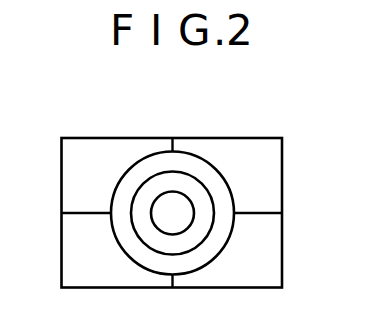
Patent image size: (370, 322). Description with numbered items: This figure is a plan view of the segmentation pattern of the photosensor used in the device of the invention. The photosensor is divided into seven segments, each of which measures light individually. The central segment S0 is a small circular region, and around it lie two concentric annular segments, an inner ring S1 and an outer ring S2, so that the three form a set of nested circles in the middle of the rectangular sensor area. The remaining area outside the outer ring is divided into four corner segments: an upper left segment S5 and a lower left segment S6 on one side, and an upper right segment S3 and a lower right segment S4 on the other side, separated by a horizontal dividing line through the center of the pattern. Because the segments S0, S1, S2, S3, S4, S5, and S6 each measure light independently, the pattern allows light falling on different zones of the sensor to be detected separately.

The photosensor segment S0 is at (177, 207).
The photosensor segment S1 is at (197, 195).
The photosensor segment S2 is at (219, 193).
The photosensor segment S3 is at (228, 175).
The photosensor segment S4 is at (228, 250).
The photosensor segment S5 is at (117, 175).
The photosensor segment S6 is at (117, 250).